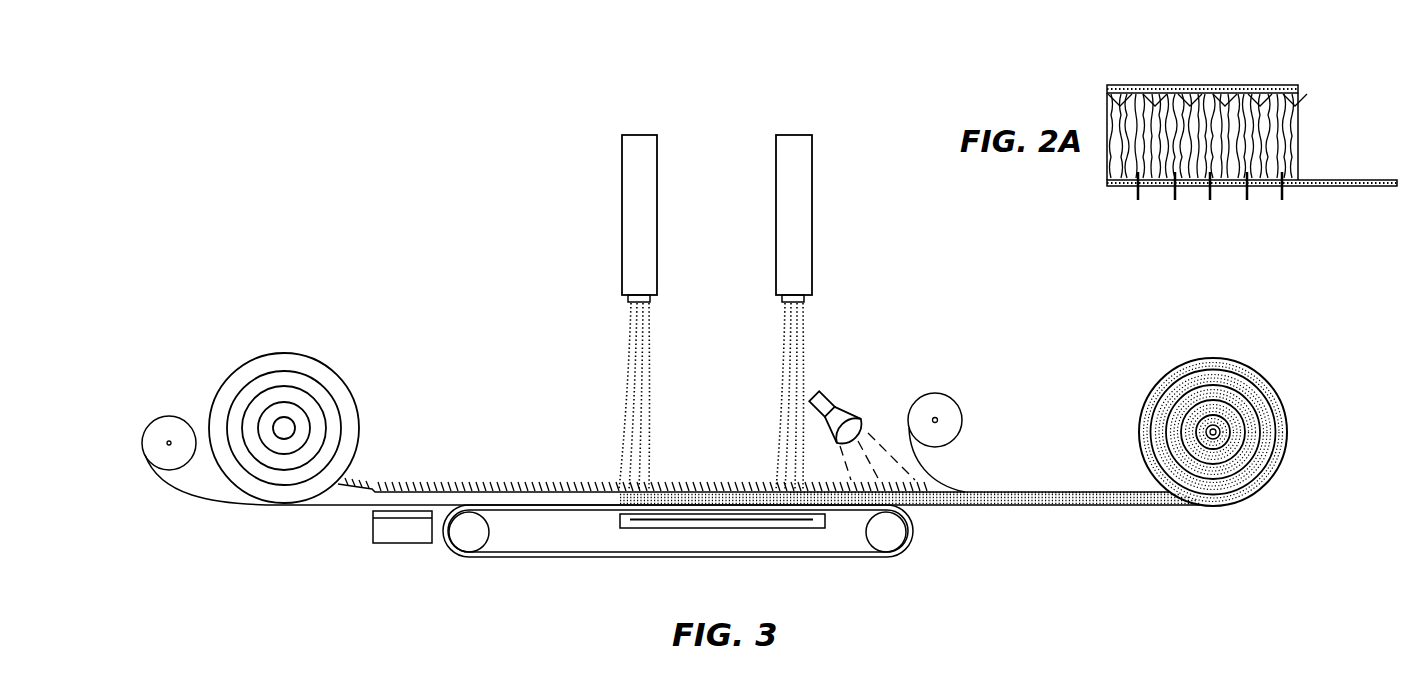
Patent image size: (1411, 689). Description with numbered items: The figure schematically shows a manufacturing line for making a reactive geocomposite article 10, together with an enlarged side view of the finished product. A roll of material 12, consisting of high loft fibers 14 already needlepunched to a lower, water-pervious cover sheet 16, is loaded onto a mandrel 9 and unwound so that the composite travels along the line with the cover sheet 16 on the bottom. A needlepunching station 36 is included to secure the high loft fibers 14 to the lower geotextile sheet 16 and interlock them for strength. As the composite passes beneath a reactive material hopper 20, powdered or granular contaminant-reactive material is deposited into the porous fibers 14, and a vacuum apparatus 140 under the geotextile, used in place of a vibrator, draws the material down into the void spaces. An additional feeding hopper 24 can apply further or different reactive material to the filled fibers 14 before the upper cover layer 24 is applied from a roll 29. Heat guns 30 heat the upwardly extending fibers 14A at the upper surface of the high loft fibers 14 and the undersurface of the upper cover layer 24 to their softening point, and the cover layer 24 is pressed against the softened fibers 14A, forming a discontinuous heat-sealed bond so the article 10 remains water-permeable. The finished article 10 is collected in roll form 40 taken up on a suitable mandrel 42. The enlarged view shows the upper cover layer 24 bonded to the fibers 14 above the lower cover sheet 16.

In FIG. 3, the mandrel 9 is at (169, 443).
In FIG. 3, the geocomposite article 10 is at (1163, 345).
In FIG. 3, the roll of material 12 is at (164, 415).
In FIG. 2A, the high loft fibers 14 is at (1290, 122).
In FIG. 3, the high loft fibers 14 is at (285, 360).
In FIG. 3, the upwardly extending fibers 14A is at (481, 489).
In FIG. 2A, the lower cover sheet 16 is at (1120, 187).
In FIG. 3, the lower cover sheet 16 is at (212, 503).
In FIG. 3, the reactive material hopper 20 is at (658, 170).
In FIG. 2A, the upper cover layer 24 is at (1215, 86).
In FIG. 3, the upper cover layer 24 is at (813, 170).
In FIG. 3, the roll 29 is at (943, 393).
In FIG. 3, the heat gun 30 is at (830, 394).
In FIG. 3, the needlepunching station 36 is at (411, 544).
In FIG. 3, the roll form 40 is at (1262, 378).
In FIG. 3, the mandrel 42 is at (1220, 430).
In FIG. 3, the vacuum apparatus 140 is at (643, 529).